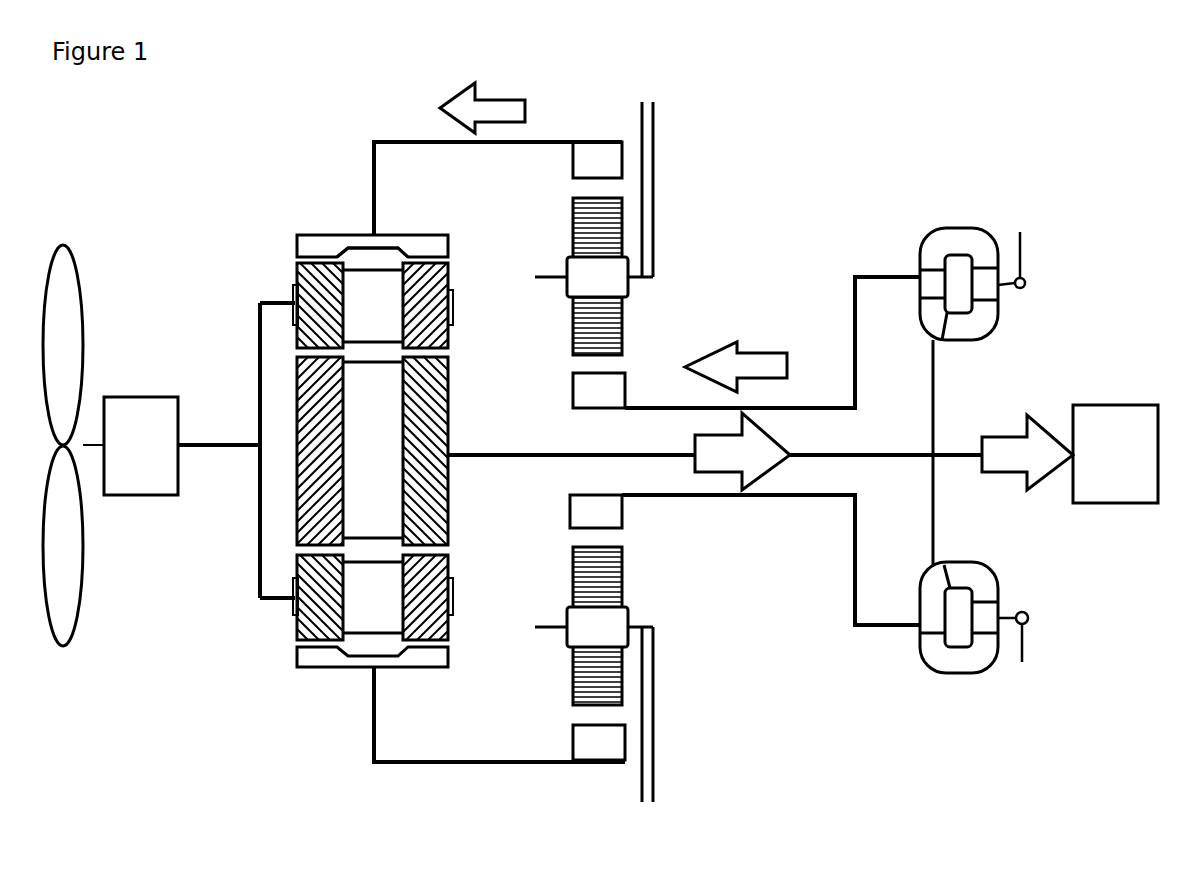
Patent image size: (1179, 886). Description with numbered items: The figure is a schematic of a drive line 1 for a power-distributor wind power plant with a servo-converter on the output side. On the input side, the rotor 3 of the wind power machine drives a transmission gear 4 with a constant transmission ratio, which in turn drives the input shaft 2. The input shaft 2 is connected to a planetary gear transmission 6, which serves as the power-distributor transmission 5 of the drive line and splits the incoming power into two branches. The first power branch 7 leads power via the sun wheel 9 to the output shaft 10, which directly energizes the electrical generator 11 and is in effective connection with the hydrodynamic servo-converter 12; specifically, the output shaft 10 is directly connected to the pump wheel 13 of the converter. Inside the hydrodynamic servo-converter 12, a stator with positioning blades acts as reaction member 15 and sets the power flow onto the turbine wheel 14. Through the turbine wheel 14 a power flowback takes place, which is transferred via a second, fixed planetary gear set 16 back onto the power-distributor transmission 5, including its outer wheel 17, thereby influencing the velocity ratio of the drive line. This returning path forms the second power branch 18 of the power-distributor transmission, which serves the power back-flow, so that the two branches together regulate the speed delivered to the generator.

The drive line 1 is at (550, 857).
The input shaft 2 is at (240, 447).
The rotor 3 is at (63, 445).
The transmission gear 4 is at (141, 446).
The power-distributor transmission 5 is at (333, 736).
The planetary gear transmission 6 is at (412, 451).
The first power branch 7 is at (728, 460).
The sun wheel 9 is at (465, 451).
The output shaft 10 is at (468, 450).
The electrical generator 11 is at (1115, 454).
The hydrodynamic servo-converter 12 is at (933, 196).
The pump wheel 13 is at (935, 298).
The turbine wheel 14 is at (928, 272).
The reaction member 15 is at (1021, 290).
The second planetary gear set 16 is at (712, 234).
The outer wheel 17 is at (352, 252).
The second power branch 18 is at (490, 108).